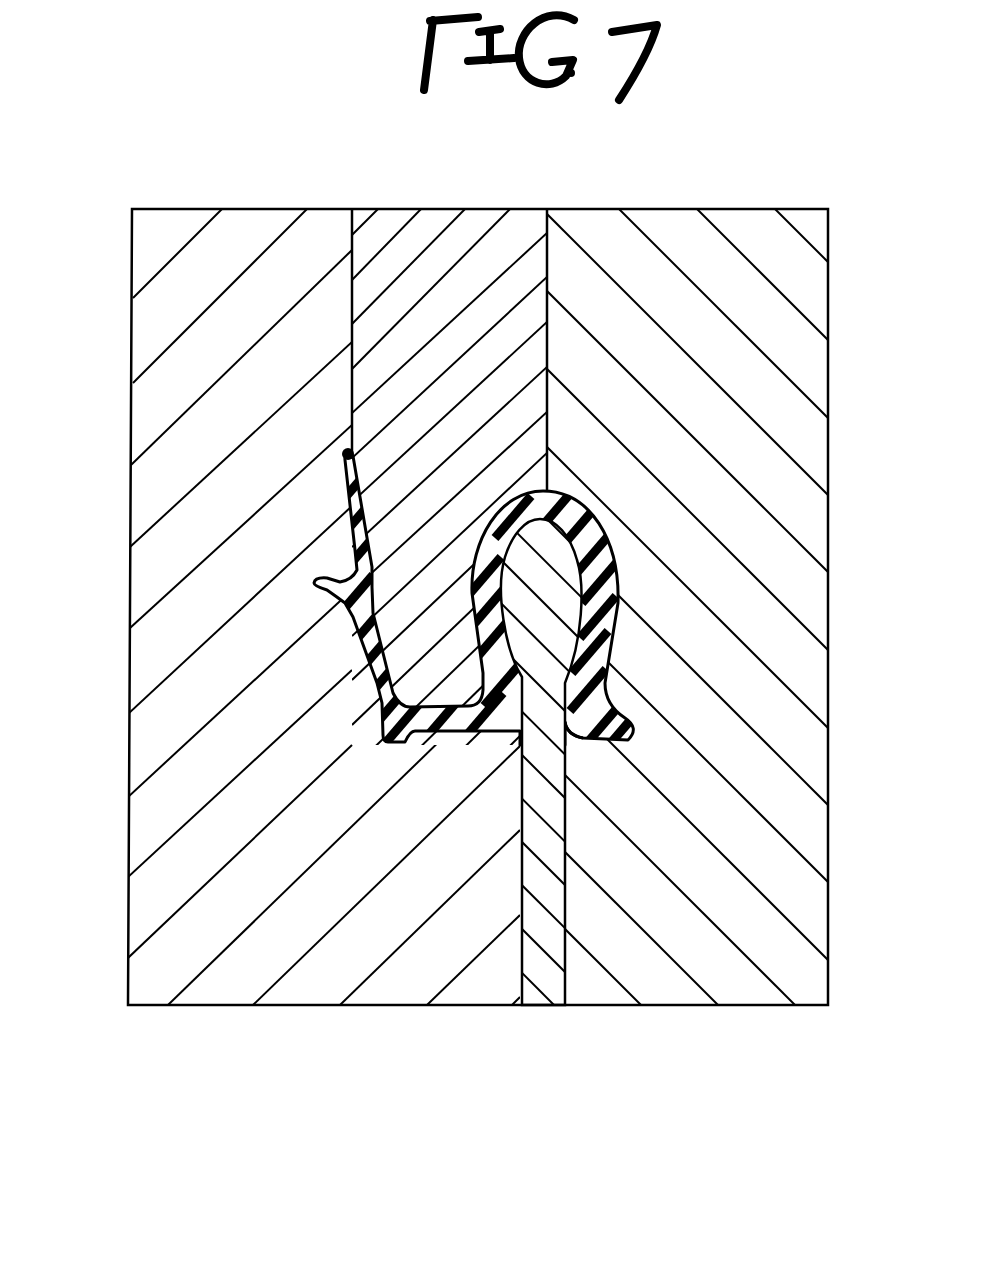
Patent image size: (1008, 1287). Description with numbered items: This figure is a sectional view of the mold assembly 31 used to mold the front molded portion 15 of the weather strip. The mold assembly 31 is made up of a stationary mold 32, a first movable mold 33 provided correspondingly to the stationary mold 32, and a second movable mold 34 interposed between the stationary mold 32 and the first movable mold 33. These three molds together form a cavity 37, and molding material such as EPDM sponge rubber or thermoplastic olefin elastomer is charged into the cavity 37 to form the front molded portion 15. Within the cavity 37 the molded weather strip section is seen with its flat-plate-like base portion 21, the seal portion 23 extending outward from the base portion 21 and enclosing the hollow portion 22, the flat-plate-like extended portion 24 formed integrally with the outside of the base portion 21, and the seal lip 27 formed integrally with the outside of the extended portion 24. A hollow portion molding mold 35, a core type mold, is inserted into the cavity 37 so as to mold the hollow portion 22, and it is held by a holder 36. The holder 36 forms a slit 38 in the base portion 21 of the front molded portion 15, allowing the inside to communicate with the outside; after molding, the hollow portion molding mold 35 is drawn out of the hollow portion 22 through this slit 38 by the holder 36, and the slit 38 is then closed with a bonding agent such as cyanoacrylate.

The front molded portion 15 is at (480, 609).
The base portion 21 is at (567, 737).
The hollow portion 22 is at (582, 610).
The seal portion 23 is at (600, 557).
The extended portion 24 is at (427, 712).
The seal lip 27 is at (352, 540).
The mold assembly 31 is at (799, 190).
The stationary mold 32 is at (828, 491).
The first movable mold 33 is at (129, 726).
The second movable mold 34 is at (453, 226).
The hollow portion molding mold 35 is at (560, 588).
The holder 36 is at (537, 996).
The cavity 37 is at (607, 628).
The slit 38 is at (578, 745).